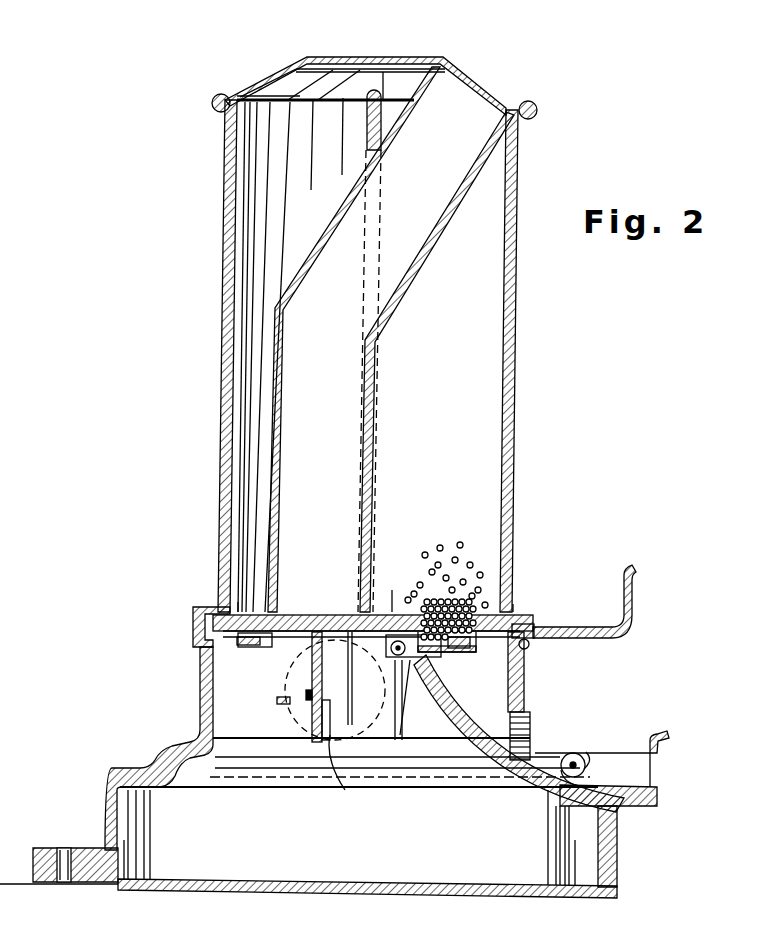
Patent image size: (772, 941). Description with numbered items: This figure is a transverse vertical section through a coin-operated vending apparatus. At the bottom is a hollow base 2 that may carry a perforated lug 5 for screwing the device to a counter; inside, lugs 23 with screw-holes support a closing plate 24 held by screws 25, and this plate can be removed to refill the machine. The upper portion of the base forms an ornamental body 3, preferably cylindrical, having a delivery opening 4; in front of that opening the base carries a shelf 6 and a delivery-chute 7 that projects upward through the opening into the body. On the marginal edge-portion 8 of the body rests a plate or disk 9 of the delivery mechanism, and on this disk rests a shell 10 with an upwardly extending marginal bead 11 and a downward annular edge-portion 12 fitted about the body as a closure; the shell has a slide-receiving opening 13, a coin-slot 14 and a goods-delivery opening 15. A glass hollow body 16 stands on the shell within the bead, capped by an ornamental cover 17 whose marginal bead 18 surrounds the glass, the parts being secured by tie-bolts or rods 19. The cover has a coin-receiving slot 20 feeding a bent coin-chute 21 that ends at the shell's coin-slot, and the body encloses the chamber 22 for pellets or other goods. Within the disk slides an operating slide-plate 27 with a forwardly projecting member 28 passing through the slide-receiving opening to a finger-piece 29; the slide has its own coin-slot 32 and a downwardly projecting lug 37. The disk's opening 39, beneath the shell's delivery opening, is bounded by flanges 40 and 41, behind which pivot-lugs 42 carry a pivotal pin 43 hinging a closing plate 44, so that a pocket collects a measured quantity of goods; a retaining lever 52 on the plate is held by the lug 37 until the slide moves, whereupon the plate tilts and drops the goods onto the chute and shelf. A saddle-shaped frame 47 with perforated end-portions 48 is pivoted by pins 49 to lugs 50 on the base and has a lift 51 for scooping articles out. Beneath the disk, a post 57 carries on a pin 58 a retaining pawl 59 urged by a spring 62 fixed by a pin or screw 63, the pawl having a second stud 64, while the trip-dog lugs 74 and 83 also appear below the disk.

The hollow base 2 is at (105, 797).
The ornamental body 3 is at (205, 688).
The delivery opening 4 is at (532, 730).
The perforated lug 5 is at (45, 850).
The shelf 6 is at (658, 798).
The delivery-chute 7 is at (448, 704).
The marginal edge-portion 8 is at (213, 650).
The plate or disk 9 is at (222, 604).
The shell 10 is at (263, 614).
The marginal bead 11 is at (205, 609).
The annular marginal edge-portion 12 is at (194, 620).
The slide-receiving opening 13 is at (535, 645).
The coin-slot 14 is at (310, 600).
The goods-delivery opening 15 is at (462, 600).
The hollow body 16 is at (221, 388).
The ornamental cover 17 is at (338, 57).
The marginal bead 18 is at (212, 104).
The tie-bolts or rods 19 is at (367, 128).
The coin-receiving slot 20 is at (477, 84).
The coin-chute 21 is at (430, 258).
The receptacle or chamber 22 is at (473, 343).
The lugs 23 is at (148, 808).
The closing plate 24 is at (313, 893).
The screws 25 is at (146, 866).
The operating slide-plate 27 is at (255, 612).
The forwardly projecting member 28 is at (578, 620).
The finger-piece or operating member 29 is at (637, 569).
The coin-slot 32 is at (330, 612).
The tongue or lug 37 is at (392, 612).
The opening 39 is at (458, 650).
The flange or shoulder 40 is at (462, 652).
The flange or shoulder 41 is at (410, 697).
The pivot-lugs or ears 42 is at (392, 703).
The pivotal pin 43 is at (400, 608).
The closing plate 44 is at (420, 705).
The saddle-shaped frame 47 is at (630, 774).
The perforated end-portions 48 is at (590, 760).
The pins 49 is at (572, 753).
The lugs or ears 50 is at (588, 756).
The lift or finger-piece 51 is at (668, 740).
The retaining lever or arm 52 is at (392, 658).
The post 57 is at (312, 712).
The pin 58 is at (349, 776).
The retaining pawl 59 is at (346, 630).
The spring 62 is at (270, 640).
The pin or screw 63 is at (246, 646).
The second stud or finger 64 is at (327, 705).
The lug or projection 74 is at (277, 700).
The lug or projection 83 is at (366, 665).